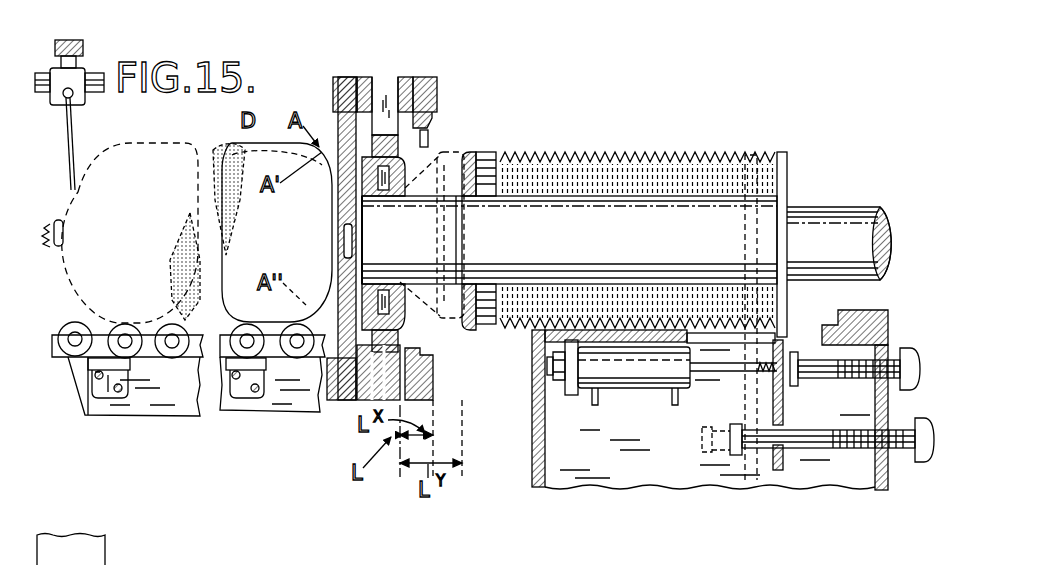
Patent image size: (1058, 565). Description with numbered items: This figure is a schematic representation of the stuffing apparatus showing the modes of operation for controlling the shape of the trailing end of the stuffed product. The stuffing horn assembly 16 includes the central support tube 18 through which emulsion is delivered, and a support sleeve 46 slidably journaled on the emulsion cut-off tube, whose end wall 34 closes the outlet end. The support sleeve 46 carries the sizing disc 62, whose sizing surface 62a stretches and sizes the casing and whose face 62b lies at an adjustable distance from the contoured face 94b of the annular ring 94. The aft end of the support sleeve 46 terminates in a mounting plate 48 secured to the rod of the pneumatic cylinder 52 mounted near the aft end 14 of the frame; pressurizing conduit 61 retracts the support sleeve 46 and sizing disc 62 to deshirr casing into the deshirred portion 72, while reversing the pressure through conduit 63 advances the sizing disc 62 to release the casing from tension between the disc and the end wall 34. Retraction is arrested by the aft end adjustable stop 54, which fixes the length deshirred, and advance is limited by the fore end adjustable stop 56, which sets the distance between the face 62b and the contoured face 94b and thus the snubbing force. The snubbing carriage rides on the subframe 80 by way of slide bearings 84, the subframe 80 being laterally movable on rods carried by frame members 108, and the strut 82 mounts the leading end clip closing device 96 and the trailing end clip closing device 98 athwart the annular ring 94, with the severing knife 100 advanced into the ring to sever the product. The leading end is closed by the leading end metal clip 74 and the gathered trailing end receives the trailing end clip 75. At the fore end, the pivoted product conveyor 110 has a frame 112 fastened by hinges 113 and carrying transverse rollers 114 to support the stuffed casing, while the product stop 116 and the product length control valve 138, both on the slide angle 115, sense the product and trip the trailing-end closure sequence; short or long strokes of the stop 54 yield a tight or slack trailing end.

The product length control valve 138 is at (58, 76).
The slide angle 115 is at (95, 87).
The product stop 116 is at (57, 115).
The leading end metal clip 74 is at (64, 233).
The transverse rollers 114 is at (70, 325).
The hinges 113 is at (100, 391).
The frame 112 is at (152, 357).
The pivoted product conveyor 110 is at (256, 422).
The frame members 108 is at (70, 550).
The slide bearings 84 is at (335, 556).
The subframe 80 is at (386, 556).
The annular ring 94 is at (360, 146).
The trailing end clip 75 is at (344, 240).
The trailing end clip closing device 98 is at (347, 77).
The strut 82 is at (385, 92).
The leading end clip closing device 96 is at (424, 77).
The contoured face 94b is at (405, 166).
The severing knife 100 is at (368, 262).
The deshirred portion 72 is at (400, 290).
The end wall 34 is at (360, 263).
The support sleeve 46 is at (632, 256).
The central support tube 18 is at (830, 212).
The stuffing horn assembly 16 is at (629, 150).
The sizing surface 62a is at (466, 152).
The face 62b is at (470, 324).
The sizing disc 62 is at (472, 334).
The mounting plate 48 is at (747, 153).
The aft end 14 is at (742, 498).
The pneumatic cylinder 52 is at (645, 372).
The conduit 61 is at (594, 404).
The conduit 63 is at (676, 404).
The aft end adjustable stop 54 is at (818, 376).
The fore end adjustable stop 56 is at (810, 449).